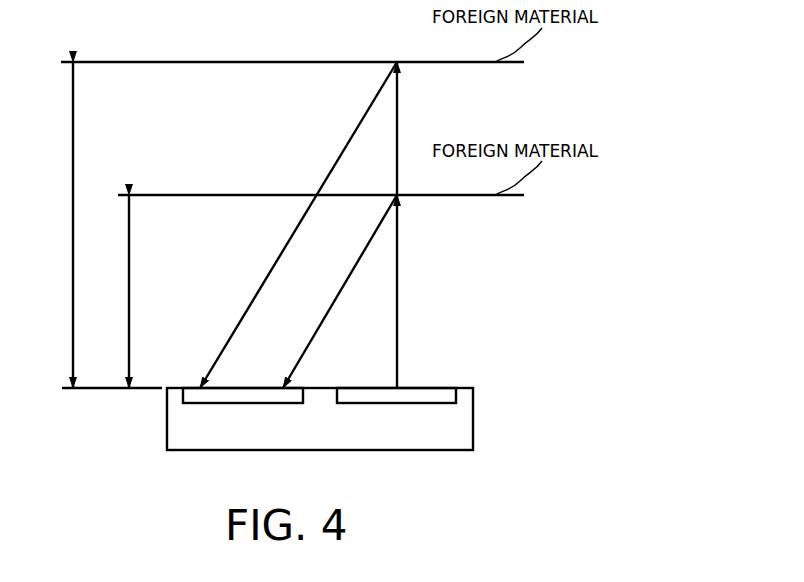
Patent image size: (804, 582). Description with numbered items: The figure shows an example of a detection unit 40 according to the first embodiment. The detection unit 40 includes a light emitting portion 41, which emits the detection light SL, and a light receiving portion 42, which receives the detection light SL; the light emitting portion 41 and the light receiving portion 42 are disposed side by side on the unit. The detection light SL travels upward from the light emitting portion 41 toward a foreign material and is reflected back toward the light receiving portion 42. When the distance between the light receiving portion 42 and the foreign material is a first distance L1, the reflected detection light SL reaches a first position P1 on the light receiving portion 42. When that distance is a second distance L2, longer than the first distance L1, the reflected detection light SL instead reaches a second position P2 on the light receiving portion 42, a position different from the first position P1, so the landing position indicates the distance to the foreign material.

The detection unit 40 is at (485, 424).
The light emitting portion 41 is at (445, 388).
The light receiving portion 42 is at (192, 388).
The detection light SL is at (397, 283).
The first position P1 is at (280, 388).
The second position P2 is at (202, 388).
The first distance L1 is at (113, 291).
The second distance L2 is at (56, 225).